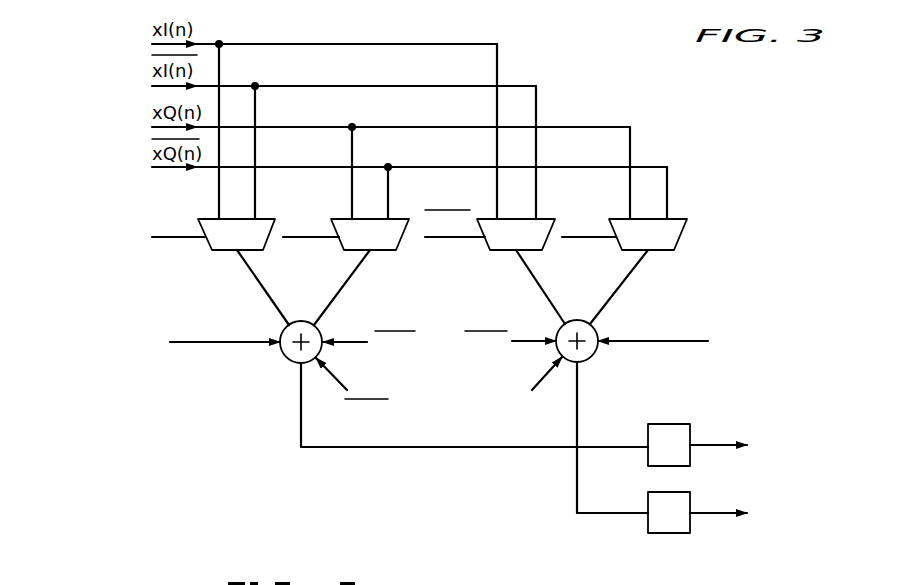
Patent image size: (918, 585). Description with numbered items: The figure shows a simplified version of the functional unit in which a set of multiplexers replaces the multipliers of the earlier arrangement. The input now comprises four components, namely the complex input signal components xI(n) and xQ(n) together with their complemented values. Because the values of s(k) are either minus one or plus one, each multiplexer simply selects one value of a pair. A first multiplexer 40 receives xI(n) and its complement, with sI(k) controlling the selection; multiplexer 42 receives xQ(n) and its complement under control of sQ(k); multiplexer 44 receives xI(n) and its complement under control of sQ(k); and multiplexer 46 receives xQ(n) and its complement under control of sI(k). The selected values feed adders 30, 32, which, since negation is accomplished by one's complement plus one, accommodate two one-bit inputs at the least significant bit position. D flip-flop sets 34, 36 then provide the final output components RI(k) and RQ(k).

The adder 30 is at (286, 356).
The adder 32 is at (592, 356).
The D flip-flop set 34 is at (672, 424).
The D flip-flop set 36 is at (668, 533).
The first multiplexer 40 is at (210, 250).
The multiplexer 42 is at (346, 250).
The multiplexer 44 is at (492, 250).
The multiplexer 46 is at (683, 238).